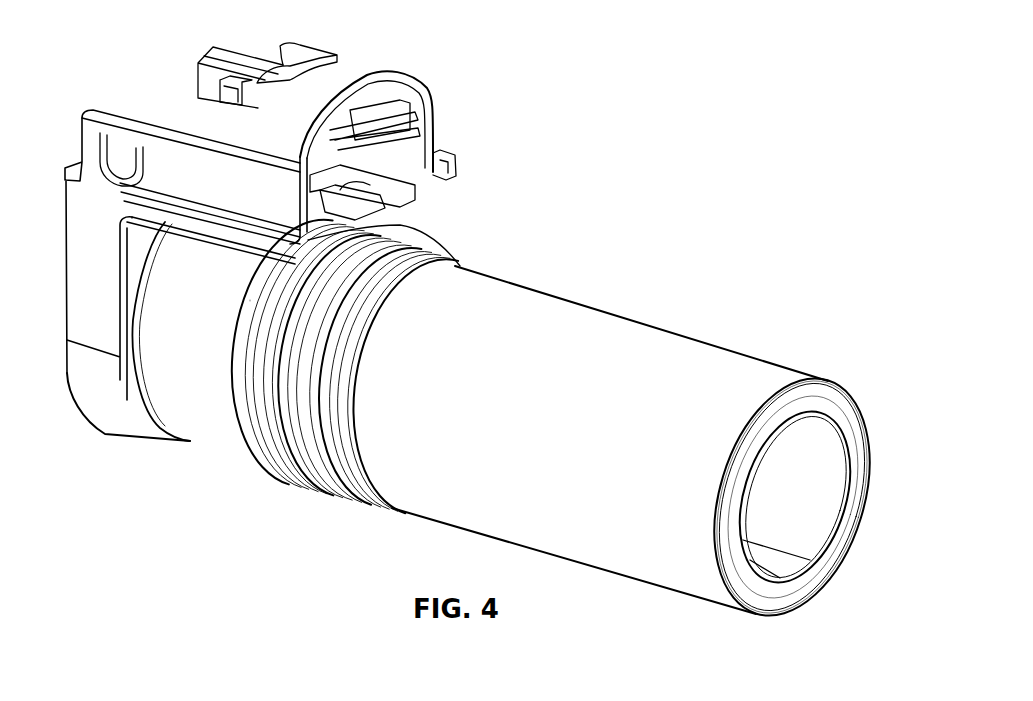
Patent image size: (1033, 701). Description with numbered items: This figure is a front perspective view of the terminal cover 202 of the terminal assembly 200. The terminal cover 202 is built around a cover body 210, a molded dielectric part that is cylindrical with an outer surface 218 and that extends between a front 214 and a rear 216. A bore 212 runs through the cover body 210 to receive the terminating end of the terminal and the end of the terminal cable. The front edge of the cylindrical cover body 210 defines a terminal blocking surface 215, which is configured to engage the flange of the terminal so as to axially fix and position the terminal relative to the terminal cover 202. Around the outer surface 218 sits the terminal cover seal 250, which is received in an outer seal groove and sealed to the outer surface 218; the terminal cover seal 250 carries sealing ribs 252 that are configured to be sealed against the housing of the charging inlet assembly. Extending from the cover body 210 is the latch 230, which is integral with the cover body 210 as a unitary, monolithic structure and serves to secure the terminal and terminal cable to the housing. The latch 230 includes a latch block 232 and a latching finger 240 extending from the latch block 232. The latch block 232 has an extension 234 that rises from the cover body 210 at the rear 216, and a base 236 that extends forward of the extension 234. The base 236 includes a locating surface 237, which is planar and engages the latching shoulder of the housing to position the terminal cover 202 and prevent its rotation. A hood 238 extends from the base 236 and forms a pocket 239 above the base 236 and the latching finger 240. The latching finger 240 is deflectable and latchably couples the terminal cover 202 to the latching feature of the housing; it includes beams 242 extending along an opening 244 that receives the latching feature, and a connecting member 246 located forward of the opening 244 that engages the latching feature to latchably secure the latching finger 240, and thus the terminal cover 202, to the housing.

The terminal assembly 200 is at (548, 66).
The terminal cover 202 is at (606, 274).
The cover body 210 is at (495, 492).
The bore 212 is at (803, 508).
The front 214 is at (812, 575).
The terminal blocking surface 215 is at (843, 422).
The rear 216 is at (65, 377).
The outer surface 218 is at (700, 395).
The latch 230 is at (407, 44).
The latch block 232 is at (440, 165).
The extension 234 is at (82, 255).
The base 236 is at (190, 222).
The locating surface 237 is at (222, 243).
The hood 238 is at (357, 72).
The pocket 239 is at (384, 111).
The latching finger 240 is at (387, 193).
The beams 242 is at (342, 155).
The opening 244 is at (318, 183).
The connecting member 246 is at (428, 236).
The terminal cover seal 250 is at (287, 457).
The sealing ribs 252 is at (250, 423).